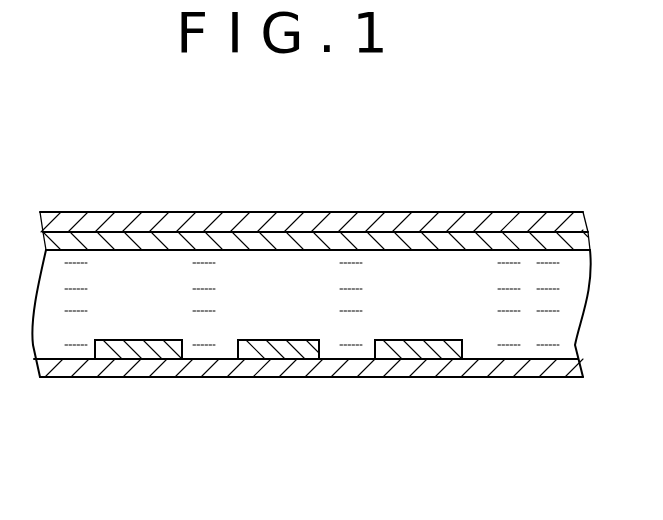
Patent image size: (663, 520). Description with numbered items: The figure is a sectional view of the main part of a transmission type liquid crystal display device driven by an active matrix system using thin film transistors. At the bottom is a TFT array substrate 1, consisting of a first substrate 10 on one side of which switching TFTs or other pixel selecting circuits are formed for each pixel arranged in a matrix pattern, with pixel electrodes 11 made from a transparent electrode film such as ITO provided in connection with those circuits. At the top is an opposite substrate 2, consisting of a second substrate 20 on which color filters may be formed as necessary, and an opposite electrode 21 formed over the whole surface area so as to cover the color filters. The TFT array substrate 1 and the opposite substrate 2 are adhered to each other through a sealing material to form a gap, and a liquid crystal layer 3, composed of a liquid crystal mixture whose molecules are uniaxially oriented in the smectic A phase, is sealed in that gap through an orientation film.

The TFT array substrate 1 is at (308, 411).
The first substrate 10 is at (245, 363).
The pixel electrodes 11 is at (300, 350).
The opposite substrate 2 is at (315, 177).
The second substrate 20 is at (284, 229).
The opposite electrode 21 is at (273, 140).
The liquid crystal layer 3 is at (430, 263).